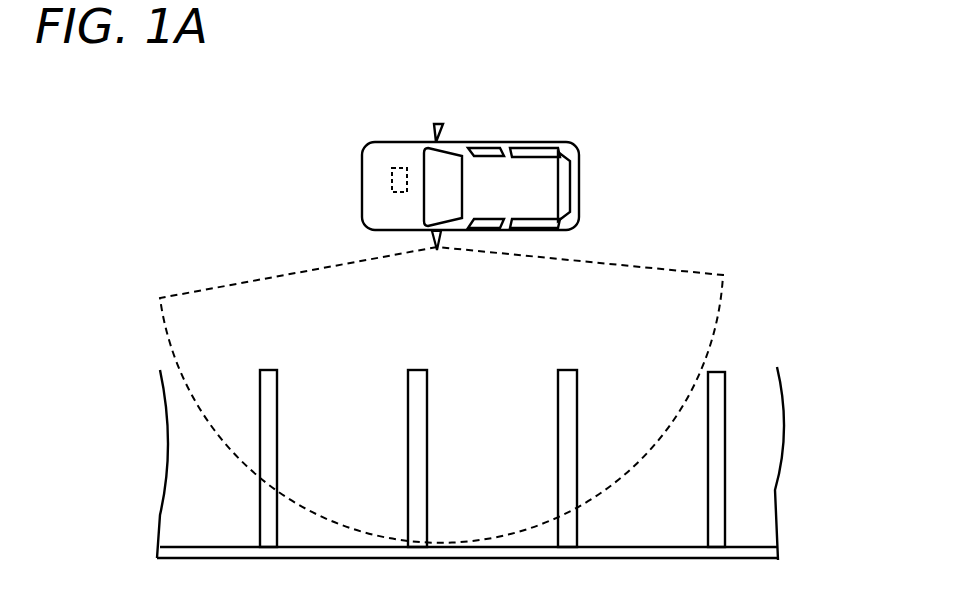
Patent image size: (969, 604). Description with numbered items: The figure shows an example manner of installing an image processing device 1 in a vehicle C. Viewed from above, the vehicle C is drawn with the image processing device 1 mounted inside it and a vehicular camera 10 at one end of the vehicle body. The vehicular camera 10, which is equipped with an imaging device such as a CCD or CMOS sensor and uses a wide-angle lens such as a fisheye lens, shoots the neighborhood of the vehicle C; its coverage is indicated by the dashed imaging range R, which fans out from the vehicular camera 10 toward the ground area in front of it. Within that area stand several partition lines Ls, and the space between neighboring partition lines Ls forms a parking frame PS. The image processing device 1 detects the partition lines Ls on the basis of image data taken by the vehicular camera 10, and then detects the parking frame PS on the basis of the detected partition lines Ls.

The image processing device 1 is at (405, 165).
The vehicle C is at (574, 142).
The vehicular camera 10 is at (437, 251).
The imaging range R is at (640, 264).
The partition lines Ls is at (426, 370).
The parking frame PS is at (515, 400).